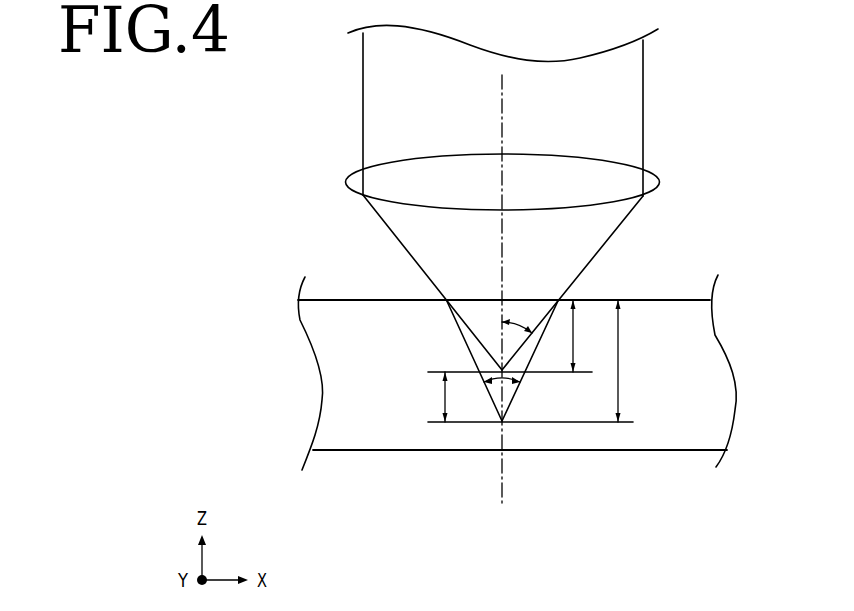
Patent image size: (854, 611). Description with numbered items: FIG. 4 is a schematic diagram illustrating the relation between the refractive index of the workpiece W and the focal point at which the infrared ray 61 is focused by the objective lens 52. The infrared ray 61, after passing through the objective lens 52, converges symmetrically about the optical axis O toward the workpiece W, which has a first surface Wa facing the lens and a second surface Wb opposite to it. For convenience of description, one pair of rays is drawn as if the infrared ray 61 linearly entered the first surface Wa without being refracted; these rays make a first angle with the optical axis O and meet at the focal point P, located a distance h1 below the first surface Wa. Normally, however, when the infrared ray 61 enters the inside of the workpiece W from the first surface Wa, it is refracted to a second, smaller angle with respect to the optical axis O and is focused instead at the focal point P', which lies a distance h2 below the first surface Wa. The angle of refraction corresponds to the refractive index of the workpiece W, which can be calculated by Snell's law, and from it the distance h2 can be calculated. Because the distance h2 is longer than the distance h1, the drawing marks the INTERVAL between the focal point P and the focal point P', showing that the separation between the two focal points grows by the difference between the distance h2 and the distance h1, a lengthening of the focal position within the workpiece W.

The infrared ray 61 is at (632, 72).
The objective lens 52 is at (617, 173).
The optical axis o is at (503, 98).
The workpiece W is at (322, 350).
The first surface Wa is at (372, 300).
The second surface Wb is at (388, 451).
The focal point P is at (503, 283).
The focal point P' is at (530, 404).
The distance h1 is at (585, 336).
The distance h2 is at (630, 361).
The interval between P and P' INTERVAL is at (405, 397).